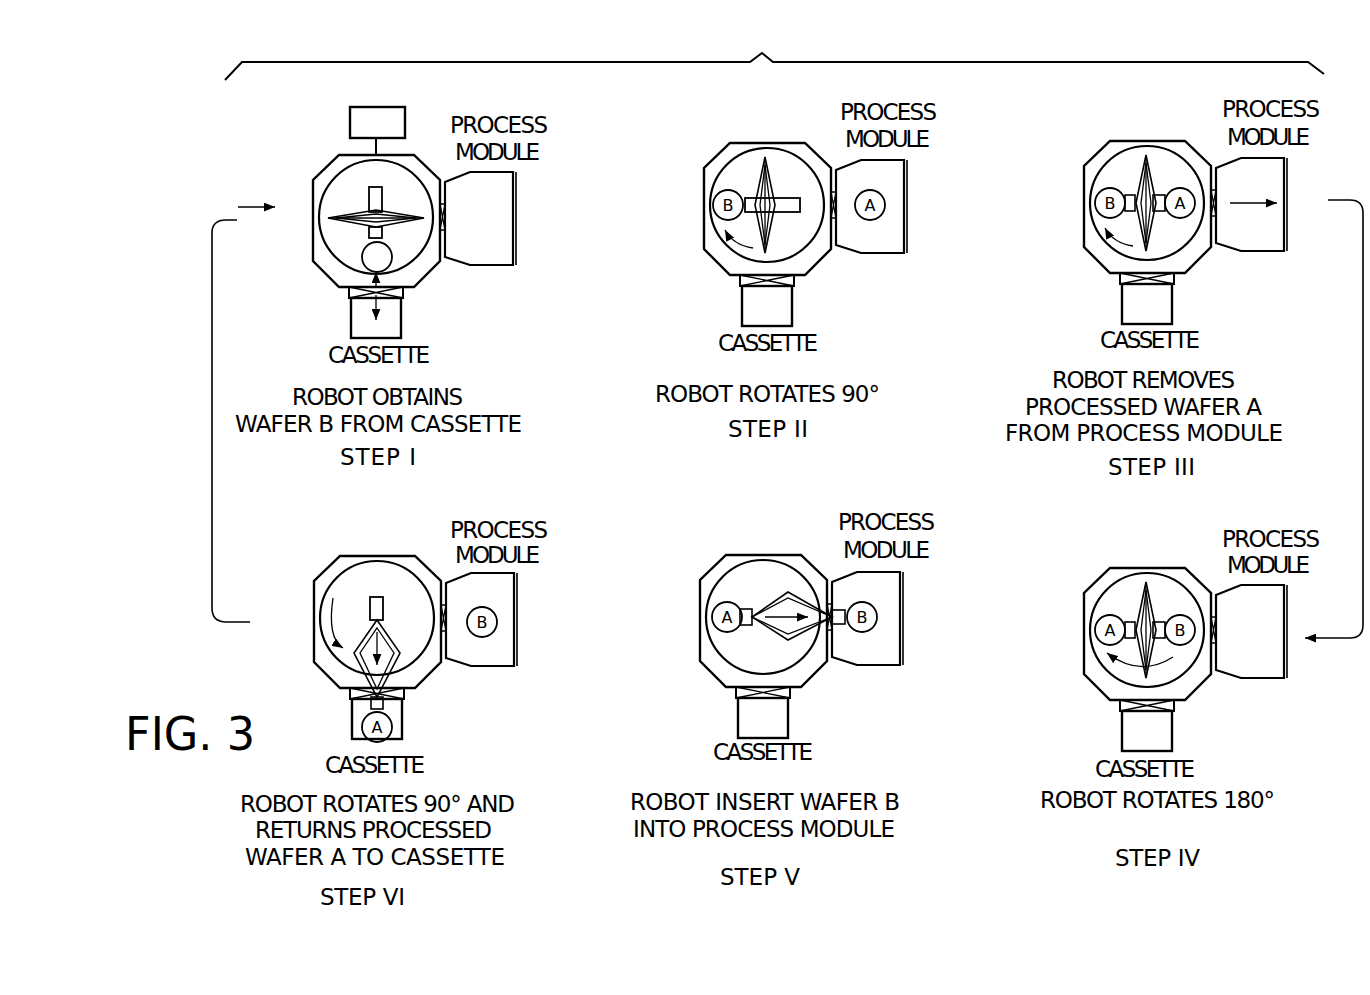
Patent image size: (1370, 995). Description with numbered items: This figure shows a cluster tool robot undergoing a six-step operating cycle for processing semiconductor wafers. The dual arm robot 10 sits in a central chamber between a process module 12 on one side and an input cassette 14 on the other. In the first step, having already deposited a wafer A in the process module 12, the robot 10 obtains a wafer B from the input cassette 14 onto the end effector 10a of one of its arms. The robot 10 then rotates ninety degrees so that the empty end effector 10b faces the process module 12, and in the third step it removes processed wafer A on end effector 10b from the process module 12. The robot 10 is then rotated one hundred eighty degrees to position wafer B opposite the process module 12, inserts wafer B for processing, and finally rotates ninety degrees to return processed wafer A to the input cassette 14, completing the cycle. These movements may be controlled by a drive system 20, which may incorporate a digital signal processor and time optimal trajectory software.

The dual arm robot 10 is at (343, 211).
The end effector 10a is at (322, 263).
The end effector 10b is at (342, 167).
The process module 12 is at (478, 242).
The input cassette 14 is at (408, 310).
The drive system 20 is at (388, 113).